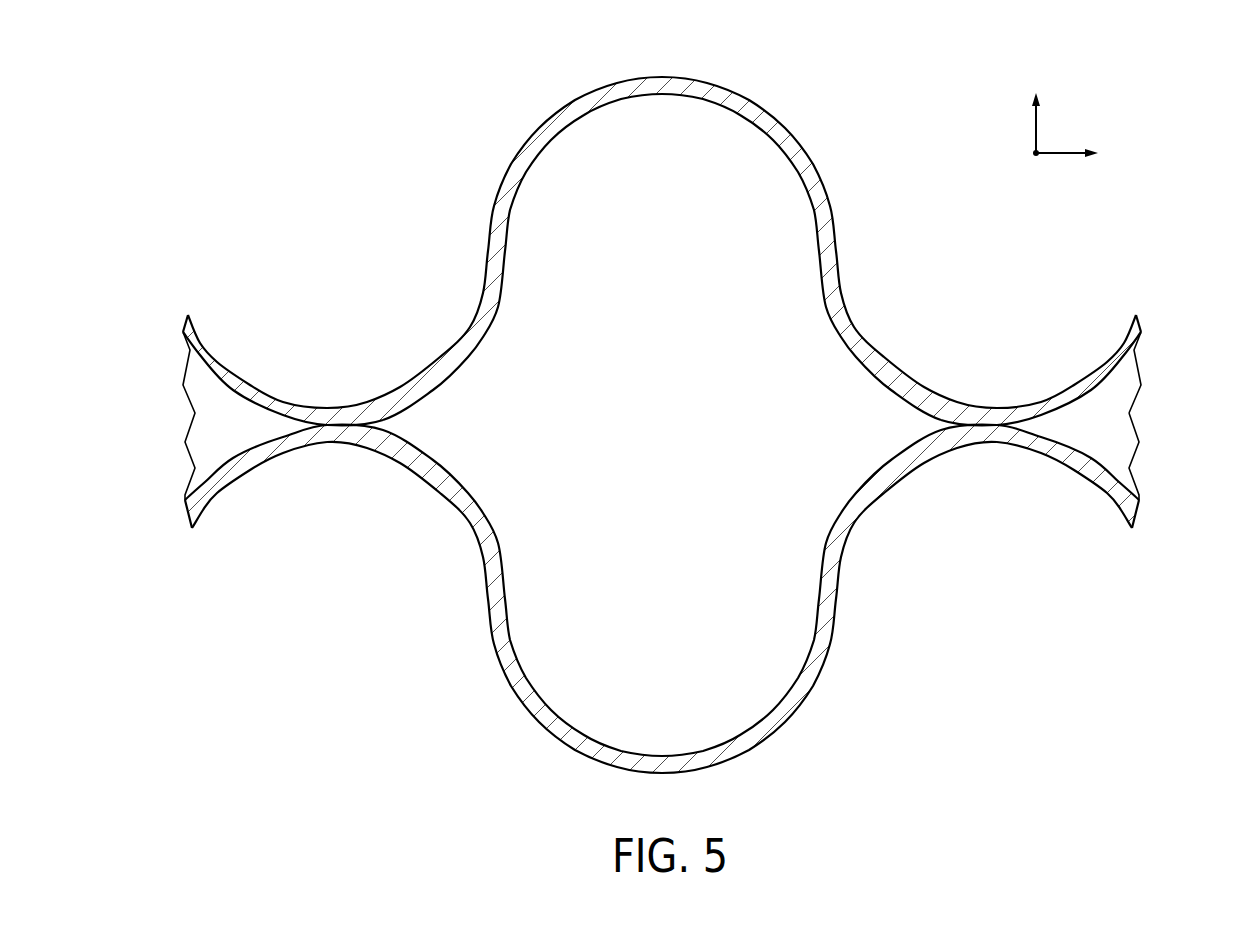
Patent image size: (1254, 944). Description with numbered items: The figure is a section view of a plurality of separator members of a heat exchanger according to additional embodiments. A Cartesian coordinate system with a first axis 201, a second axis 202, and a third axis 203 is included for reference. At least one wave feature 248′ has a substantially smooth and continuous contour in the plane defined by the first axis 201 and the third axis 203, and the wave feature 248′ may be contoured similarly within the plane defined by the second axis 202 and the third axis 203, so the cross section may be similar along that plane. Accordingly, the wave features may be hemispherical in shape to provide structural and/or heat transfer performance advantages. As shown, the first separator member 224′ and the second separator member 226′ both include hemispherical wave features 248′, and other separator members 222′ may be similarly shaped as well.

The wave feature 248′ is at (669, 399).
The separator member 222′ is at (170, 313).
The first separator member 224′ is at (1124, 373).
The second separator member 226′ is at (1122, 474).
The first axis 201 is at (1065, 153).
The second axis 202 is at (1036, 157).
The third axis 203 is at (1036, 130).